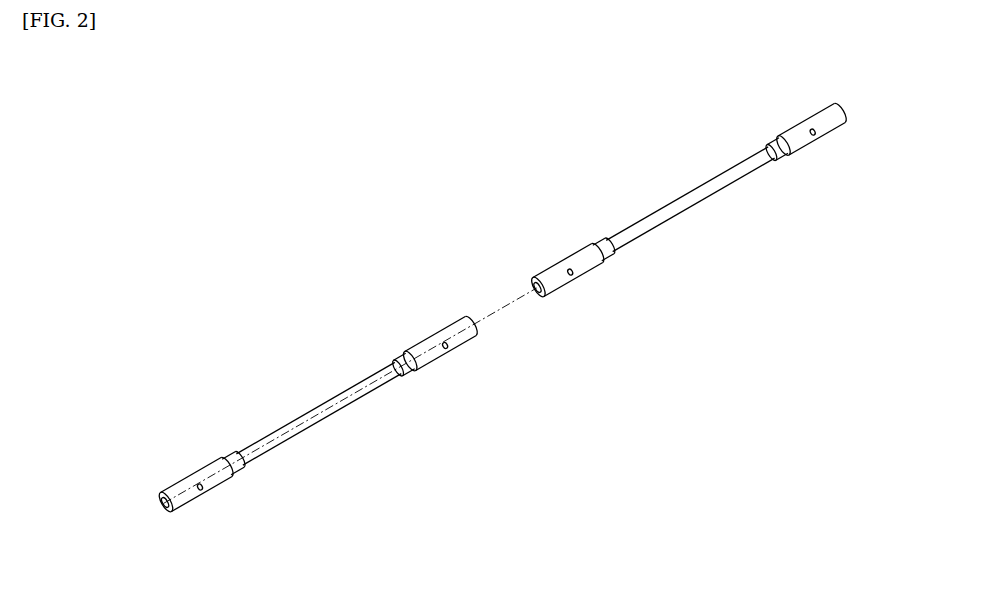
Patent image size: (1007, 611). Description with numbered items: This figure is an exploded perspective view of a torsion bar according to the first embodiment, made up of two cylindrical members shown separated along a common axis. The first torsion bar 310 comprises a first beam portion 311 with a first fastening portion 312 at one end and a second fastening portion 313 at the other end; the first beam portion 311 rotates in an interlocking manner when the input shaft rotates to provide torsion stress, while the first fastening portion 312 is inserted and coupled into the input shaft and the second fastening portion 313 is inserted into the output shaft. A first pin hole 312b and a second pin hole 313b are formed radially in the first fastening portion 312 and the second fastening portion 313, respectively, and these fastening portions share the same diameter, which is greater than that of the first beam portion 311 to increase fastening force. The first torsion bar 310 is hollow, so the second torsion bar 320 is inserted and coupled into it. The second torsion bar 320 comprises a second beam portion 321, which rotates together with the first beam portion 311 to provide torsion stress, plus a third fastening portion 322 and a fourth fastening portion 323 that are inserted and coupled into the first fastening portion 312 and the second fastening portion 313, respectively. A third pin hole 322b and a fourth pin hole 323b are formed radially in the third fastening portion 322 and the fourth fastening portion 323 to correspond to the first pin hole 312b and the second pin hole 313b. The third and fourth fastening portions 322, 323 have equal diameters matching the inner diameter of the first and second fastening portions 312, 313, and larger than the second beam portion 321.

The first torsion bar 310 is at (273, 411).
The first beam portion 311 is at (331, 408).
The first fastening portion 312 is at (433, 334).
The first pin hole 312b is at (450, 348).
The second fastening portion 313 is at (219, 469).
The second pin hole 313b is at (206, 490).
The second torsion bar 320 is at (633, 209).
The second beam portion 321 is at (691, 200).
The third fastening portion 322 is at (803, 134).
The third pin hole 322b is at (815, 135).
The fourth fastening portion 323 is at (588, 251).
The fourth pin hole 323b is at (572, 277).